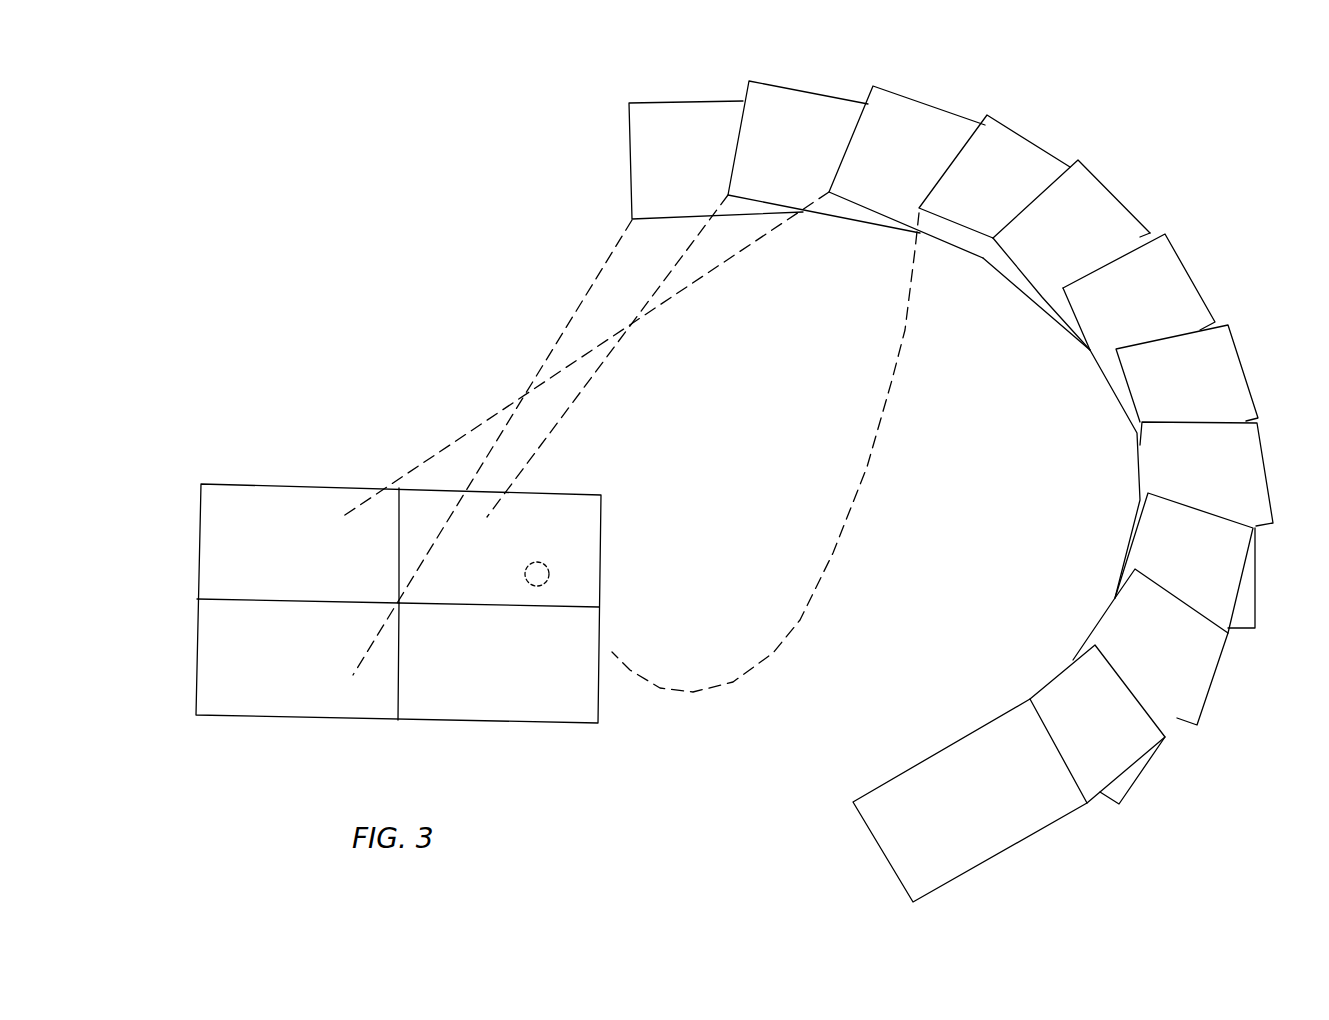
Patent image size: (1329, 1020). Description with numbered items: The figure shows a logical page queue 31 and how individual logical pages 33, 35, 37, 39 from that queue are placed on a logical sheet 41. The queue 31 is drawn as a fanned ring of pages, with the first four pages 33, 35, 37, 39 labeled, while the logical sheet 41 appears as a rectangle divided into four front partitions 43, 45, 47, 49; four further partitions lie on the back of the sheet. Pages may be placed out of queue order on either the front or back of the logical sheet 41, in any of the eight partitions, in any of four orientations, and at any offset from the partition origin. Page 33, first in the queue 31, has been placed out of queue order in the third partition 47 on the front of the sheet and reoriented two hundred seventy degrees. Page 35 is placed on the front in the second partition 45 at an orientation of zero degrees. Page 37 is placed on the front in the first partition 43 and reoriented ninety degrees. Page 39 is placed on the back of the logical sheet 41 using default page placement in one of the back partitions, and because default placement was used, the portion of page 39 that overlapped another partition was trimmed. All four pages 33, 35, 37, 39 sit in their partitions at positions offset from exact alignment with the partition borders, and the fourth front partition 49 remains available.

The logical page queue 31 is at (1218, 323).
The logical page 33 is at (710, 119).
The logical page 35 is at (824, 126).
The logical page 37 is at (907, 145).
The logical page 39 is at (994, 153).
The logical sheet 41 is at (240, 484).
The first partition 43 is at (232, 549).
The second partition 45 is at (567, 535).
The third partition 47 is at (233, 661).
The fourth partition 49 is at (516, 692).